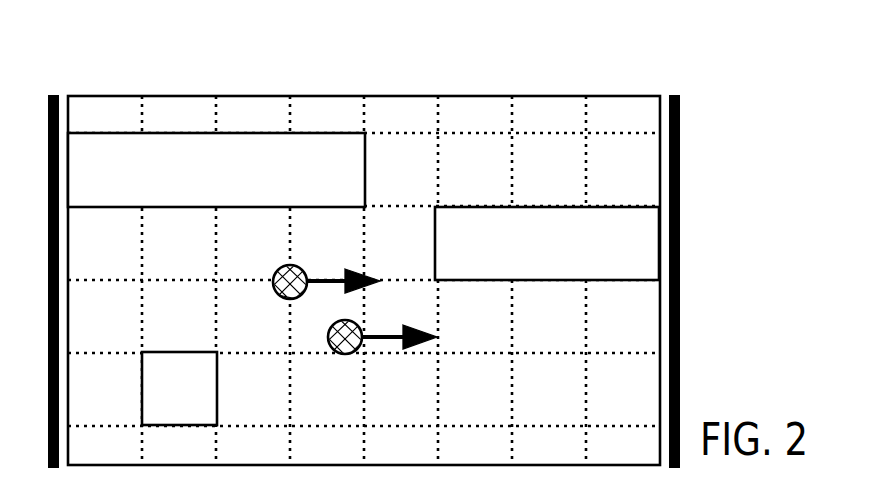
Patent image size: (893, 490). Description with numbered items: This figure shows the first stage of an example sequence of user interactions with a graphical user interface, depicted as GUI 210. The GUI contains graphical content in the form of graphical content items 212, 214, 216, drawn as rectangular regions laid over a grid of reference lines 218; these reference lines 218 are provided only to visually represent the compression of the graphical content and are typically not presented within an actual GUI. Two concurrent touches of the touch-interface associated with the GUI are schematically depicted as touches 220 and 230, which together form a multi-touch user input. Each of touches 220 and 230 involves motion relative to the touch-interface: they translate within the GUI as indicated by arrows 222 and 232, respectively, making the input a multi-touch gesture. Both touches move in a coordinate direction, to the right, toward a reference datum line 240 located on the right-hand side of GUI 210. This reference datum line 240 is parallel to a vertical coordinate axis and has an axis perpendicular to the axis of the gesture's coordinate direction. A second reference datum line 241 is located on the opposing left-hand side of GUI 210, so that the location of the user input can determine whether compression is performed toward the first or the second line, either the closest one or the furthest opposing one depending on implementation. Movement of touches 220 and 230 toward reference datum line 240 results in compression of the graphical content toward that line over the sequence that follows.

The GUI 210 is at (102, 96).
The graphical content item 212 is at (233, 182).
The graphical content item 214 is at (565, 255).
The graphical content item 216 is at (197, 400).
The reference lines 218 is at (510, 116).
The touch 220 is at (281, 271).
The arrow 222 is at (331, 282).
The touch 230 is at (339, 349).
The arrow 232 is at (389, 339).
The reference datum line 240 is at (673, 308).
The second reference datum line 241 is at (54, 309).